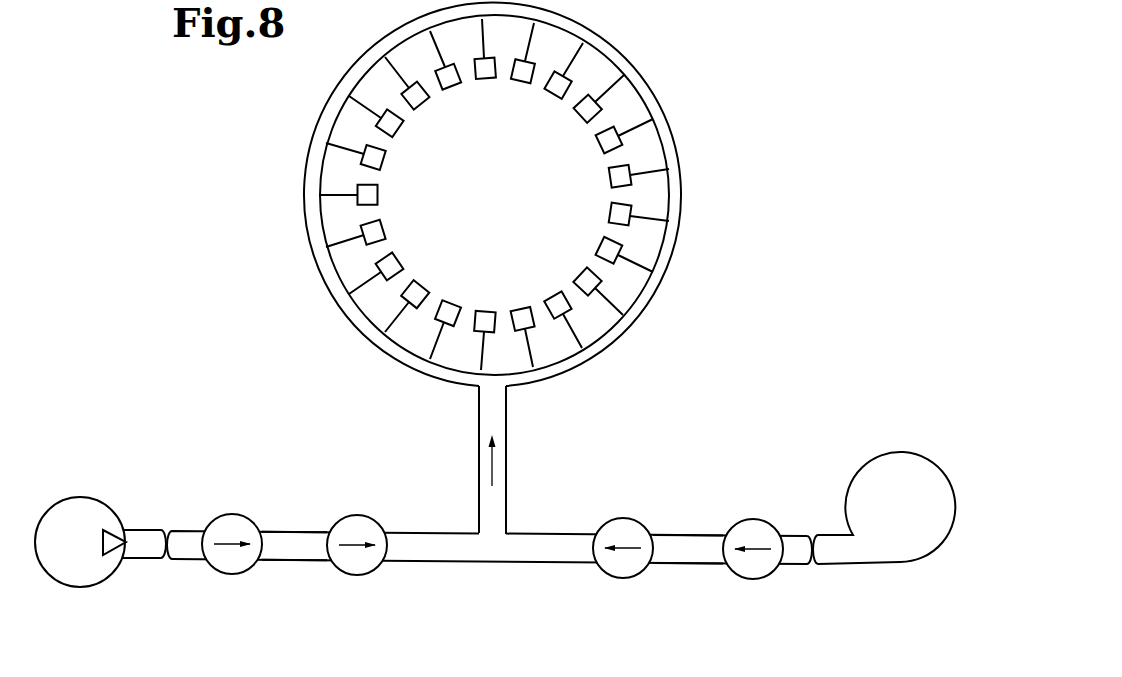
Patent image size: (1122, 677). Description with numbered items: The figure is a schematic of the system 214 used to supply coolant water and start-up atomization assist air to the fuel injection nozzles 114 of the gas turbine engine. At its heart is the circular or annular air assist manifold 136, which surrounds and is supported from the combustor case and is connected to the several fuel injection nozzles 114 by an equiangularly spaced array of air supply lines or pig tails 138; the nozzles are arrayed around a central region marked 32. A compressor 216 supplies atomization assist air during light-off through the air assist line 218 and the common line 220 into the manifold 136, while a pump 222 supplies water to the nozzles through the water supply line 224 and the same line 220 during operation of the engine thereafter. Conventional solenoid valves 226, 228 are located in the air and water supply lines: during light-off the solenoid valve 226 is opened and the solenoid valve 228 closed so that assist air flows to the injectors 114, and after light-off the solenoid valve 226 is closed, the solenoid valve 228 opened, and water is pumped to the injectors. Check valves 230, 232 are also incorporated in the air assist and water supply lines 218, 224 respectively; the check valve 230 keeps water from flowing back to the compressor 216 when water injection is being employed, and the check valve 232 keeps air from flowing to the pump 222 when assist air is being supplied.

The air assist manifold 136 is at (629, 59).
The wafer 32 is at (486, 225).
The fuel injection nozzles 114 is at (522, 82).
The pig tails 138 is at (645, 214).
The line 220 is at (478, 429).
The system 214 is at (738, 408).
The air assist line 218 is at (284, 531).
The water supply line 224 is at (680, 535).
The compressor 216 is at (82, 497).
The solenoid valve 226 is at (233, 514).
The check valve 230 is at (372, 518).
The check valve 232 is at (612, 522).
The solenoid valve 228 is at (765, 523).
The pump 222 is at (900, 452).